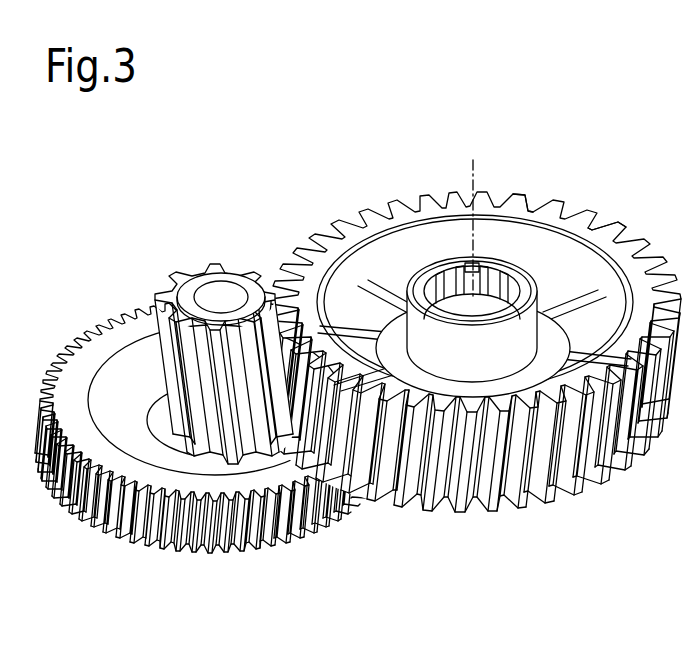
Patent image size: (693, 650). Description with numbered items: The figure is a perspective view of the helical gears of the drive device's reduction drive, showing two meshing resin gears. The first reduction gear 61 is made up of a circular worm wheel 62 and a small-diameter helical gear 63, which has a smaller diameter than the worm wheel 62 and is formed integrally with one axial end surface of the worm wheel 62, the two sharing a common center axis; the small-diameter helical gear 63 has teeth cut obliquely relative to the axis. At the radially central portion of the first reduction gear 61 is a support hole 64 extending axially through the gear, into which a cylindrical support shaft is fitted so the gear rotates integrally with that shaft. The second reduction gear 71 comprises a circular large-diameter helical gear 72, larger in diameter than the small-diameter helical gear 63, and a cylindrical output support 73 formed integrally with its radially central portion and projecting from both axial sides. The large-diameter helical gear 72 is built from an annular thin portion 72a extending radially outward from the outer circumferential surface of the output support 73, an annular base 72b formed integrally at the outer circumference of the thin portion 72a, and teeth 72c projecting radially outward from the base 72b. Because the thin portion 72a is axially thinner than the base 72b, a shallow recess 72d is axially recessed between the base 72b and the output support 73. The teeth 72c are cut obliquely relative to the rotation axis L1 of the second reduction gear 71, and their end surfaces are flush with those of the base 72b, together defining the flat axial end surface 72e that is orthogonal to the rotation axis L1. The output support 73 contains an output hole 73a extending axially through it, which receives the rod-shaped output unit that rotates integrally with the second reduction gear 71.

The first reduction gear 61 is at (203, 344).
The worm wheel 62 is at (107, 523).
The small-diameter helical gear 63 is at (180, 397).
The support hole 64 is at (217, 288).
The second reduction gear 71 is at (470, 346).
The large-diameter helical gear 72 is at (485, 508).
The thin portion 72a is at (358, 288).
The base 72b is at (388, 225).
The teeth 72c is at (467, 202).
The shallow recess 72d is at (587, 250).
The axial end surface 72e is at (520, 212).
The output support 73 is at (527, 336).
The output hole 73a is at (485, 312).
The rotation axis L1 is at (478, 232).